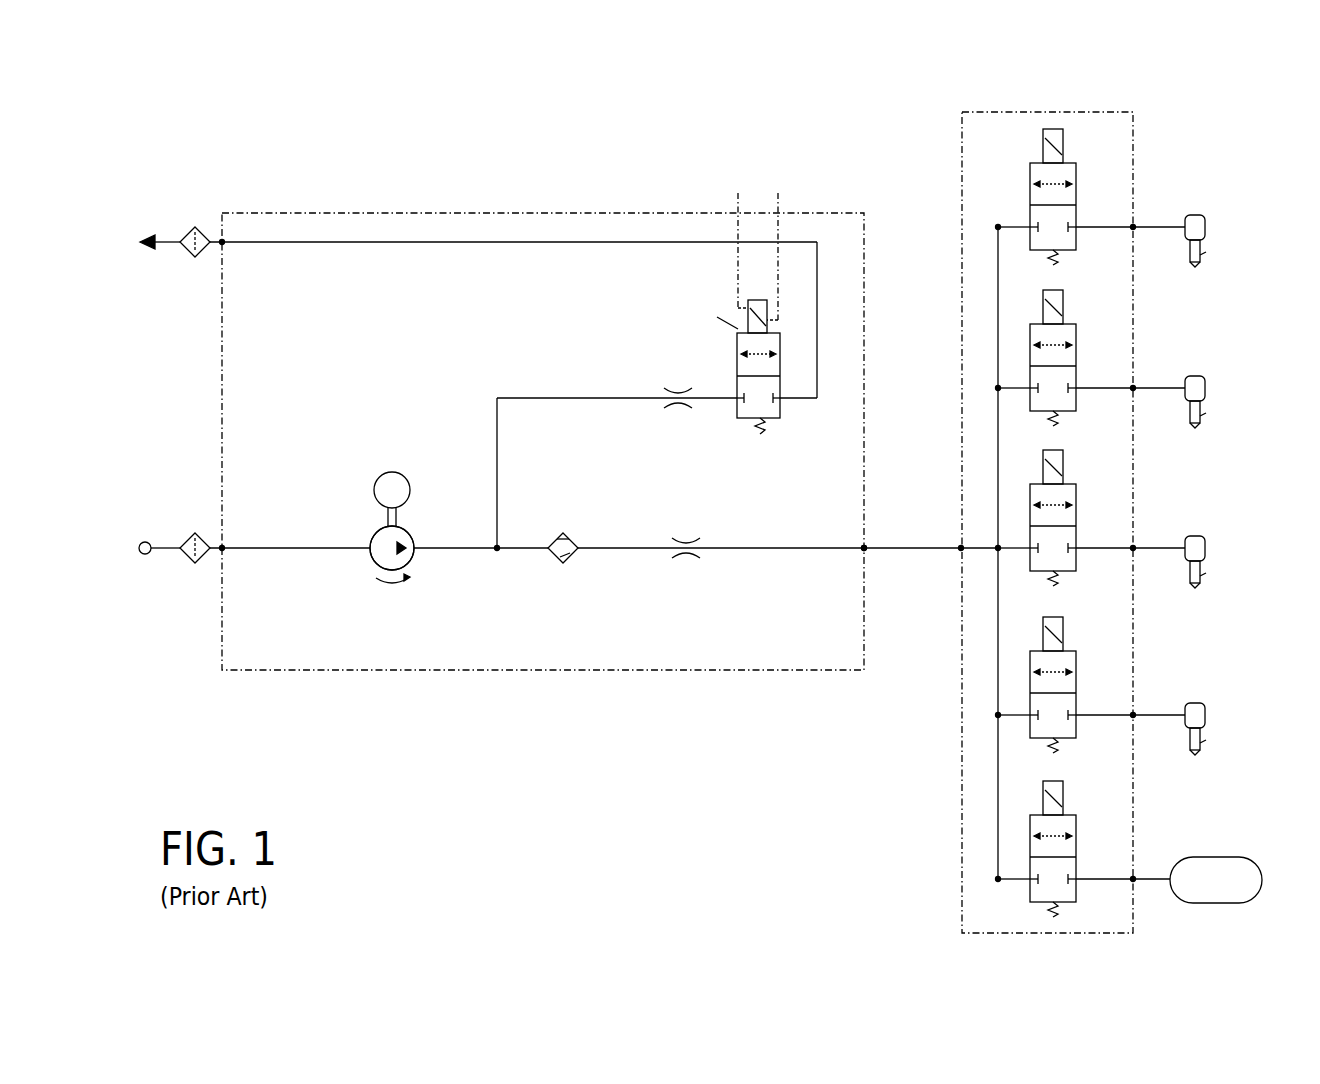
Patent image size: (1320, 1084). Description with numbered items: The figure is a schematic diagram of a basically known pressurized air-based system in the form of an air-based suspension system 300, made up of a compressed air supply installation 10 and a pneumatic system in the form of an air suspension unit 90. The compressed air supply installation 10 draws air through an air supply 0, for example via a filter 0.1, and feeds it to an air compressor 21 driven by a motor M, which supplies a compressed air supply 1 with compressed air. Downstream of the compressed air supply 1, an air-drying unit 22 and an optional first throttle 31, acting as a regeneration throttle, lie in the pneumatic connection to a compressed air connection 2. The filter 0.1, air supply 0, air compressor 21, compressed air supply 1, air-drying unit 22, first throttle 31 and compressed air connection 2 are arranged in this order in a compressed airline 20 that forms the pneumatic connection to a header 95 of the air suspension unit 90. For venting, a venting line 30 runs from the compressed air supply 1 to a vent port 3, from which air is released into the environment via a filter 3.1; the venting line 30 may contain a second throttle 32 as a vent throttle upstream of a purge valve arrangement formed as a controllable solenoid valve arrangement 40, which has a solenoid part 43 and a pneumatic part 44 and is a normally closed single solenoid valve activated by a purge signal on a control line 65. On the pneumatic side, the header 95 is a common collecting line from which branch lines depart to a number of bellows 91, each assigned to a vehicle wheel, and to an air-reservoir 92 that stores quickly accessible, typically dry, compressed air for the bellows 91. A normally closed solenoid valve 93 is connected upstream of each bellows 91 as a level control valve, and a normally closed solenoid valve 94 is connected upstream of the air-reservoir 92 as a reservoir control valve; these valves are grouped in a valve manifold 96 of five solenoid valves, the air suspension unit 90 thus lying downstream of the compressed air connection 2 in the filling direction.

The air-based suspension system 300 is at (355, 140).
The compressed air supply installation 10 is at (278, 192).
The compressed air supply 1 is at (338, 510).
The air compressor 21 is at (369, 559).
The compressed airline 20 is at (795, 545).
The compressed air connection 2 is at (868, 547).
The header 95 is at (925, 551).
The filter 0.1 is at (182, 546).
The air supply 0 is at (212, 558).
The filter 3.1 is at (183, 238).
The vent port 3 is at (212, 255).
The venting line 30 is at (528, 396).
The second throttle 32 is at (678, 412).
The air-drying unit 22 is at (550, 563).
The first throttle 31 is at (686, 564).
The solenoid valve arrangement 40 is at (800, 416).
The solenoid part 43 is at (748, 304).
The pneumatic part 44 is at (775, 332).
The control line 65 is at (738, 200).
The air suspension unit 90 is at (1222, 110).
The valve manifold 96 is at (1133, 140).
The solenoid valve 93 is at (1077, 170).
The solenoid valve 94 is at (1077, 825).
The bellows 91 is at (1207, 226).
The air-reservoir 92 is at (1222, 857).